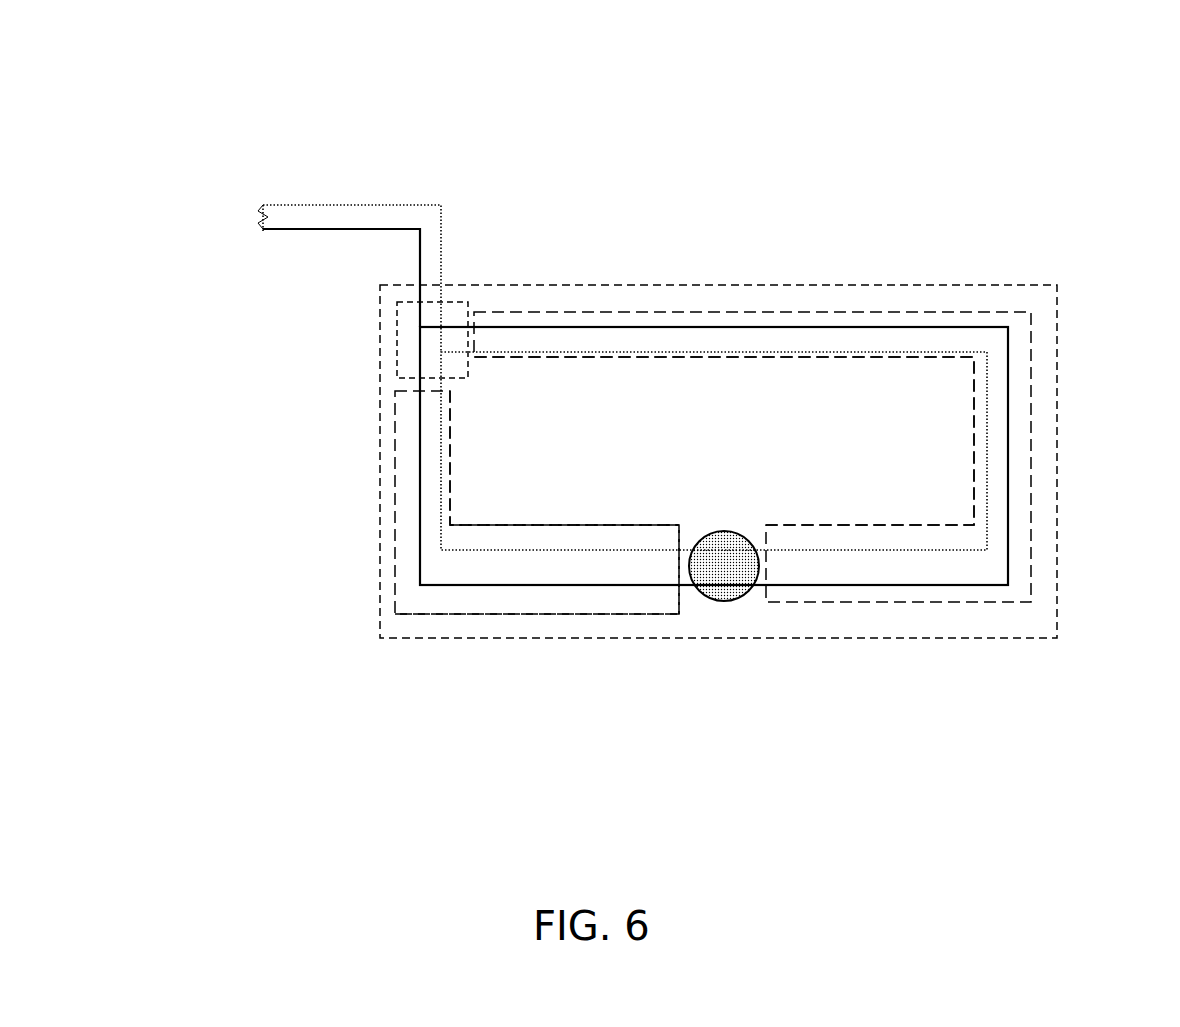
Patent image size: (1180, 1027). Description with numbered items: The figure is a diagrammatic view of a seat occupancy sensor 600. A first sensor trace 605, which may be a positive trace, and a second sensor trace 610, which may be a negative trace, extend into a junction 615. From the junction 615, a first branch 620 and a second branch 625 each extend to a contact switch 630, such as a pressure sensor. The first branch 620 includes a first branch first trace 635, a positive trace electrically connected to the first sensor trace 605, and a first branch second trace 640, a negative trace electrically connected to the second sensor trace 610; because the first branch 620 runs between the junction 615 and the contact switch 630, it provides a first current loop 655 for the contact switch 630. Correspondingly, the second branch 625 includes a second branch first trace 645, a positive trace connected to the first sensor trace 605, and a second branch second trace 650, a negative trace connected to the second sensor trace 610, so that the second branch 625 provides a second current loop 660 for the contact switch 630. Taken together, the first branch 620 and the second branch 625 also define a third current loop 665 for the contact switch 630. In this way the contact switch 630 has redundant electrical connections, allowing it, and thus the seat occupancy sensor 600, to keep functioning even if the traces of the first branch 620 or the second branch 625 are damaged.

The seat occupancy sensor 600 is at (1008, 120).
The first sensor trace 605 is at (418, 205).
The second sensor trace 610 is at (323, 229).
The junction 615 is at (398, 318).
The first branch 620 is at (393, 513).
The second branch 625 is at (907, 312).
The contact switch 630 is at (722, 596).
The first branch first trace 635 is at (450, 475).
The first branch second trace 640 is at (595, 585).
The second branch first trace 645 is at (623, 353).
The second branch second trace 650 is at (595, 326).
The first current loop 655 is at (440, 616).
The second current loop 660 is at (758, 312).
The third current loop 665 is at (1058, 470).